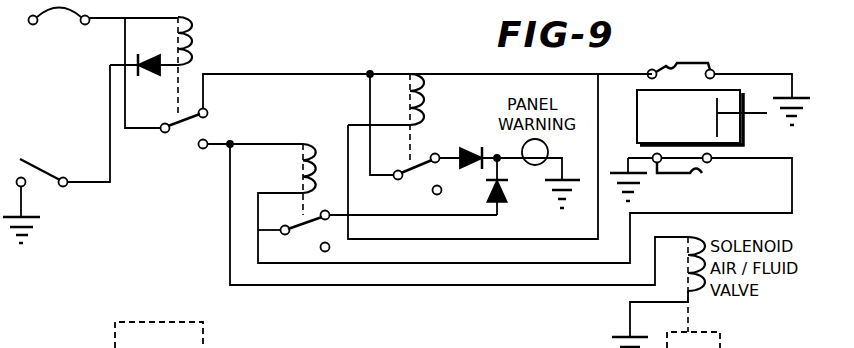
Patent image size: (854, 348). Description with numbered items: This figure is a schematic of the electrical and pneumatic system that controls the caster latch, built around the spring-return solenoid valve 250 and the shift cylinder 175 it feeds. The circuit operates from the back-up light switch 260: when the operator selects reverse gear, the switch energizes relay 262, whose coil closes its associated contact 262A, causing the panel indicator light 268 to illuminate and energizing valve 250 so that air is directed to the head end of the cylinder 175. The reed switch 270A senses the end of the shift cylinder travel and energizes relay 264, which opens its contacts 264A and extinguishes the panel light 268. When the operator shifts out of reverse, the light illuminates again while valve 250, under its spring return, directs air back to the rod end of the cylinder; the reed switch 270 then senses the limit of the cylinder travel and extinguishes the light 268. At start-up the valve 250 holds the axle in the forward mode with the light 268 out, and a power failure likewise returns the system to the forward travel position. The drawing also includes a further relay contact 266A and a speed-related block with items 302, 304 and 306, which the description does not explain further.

The relay 262 is at (194, 40).
The contact 262A is at (209, 119).
The back-up light switch 260 is at (66, 148).
The relay 264 is at (418, 75).
The relay contact switch 266A is at (420, 158).
The contacts 264A is at (330, 247).
The panel indicator light 268 is at (537, 165).
The reed switch 270 is at (713, 70).
The shift cylinder 175 is at (745, 100).
The reed switch 270A is at (711, 161).
The solenoid valve 250 is at (725, 342).
The speed sensor 302 is at (207, 346).
The sensor 304 is at (289, 333).
The sensor 306 is at (479, 343).